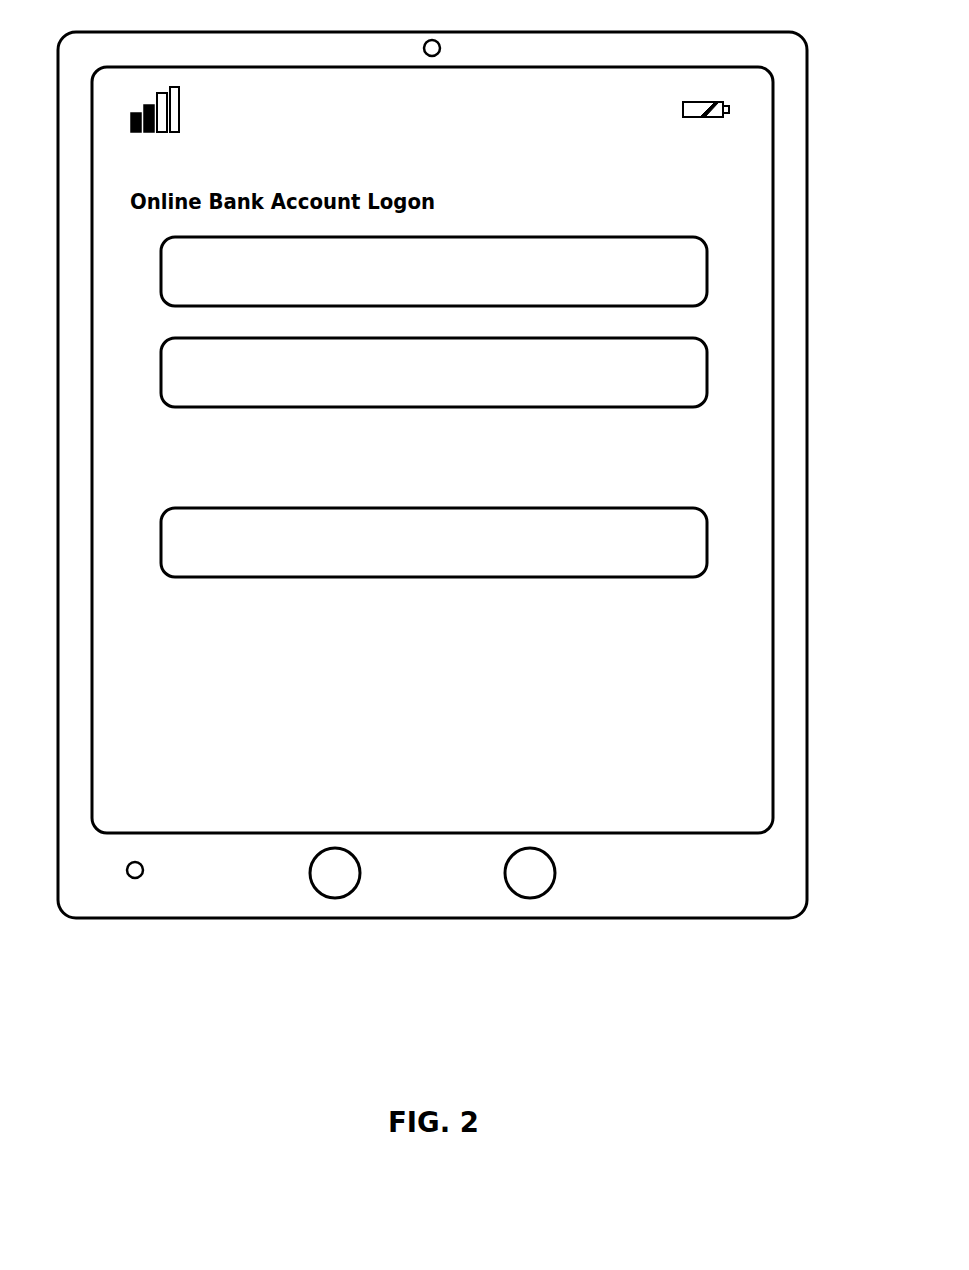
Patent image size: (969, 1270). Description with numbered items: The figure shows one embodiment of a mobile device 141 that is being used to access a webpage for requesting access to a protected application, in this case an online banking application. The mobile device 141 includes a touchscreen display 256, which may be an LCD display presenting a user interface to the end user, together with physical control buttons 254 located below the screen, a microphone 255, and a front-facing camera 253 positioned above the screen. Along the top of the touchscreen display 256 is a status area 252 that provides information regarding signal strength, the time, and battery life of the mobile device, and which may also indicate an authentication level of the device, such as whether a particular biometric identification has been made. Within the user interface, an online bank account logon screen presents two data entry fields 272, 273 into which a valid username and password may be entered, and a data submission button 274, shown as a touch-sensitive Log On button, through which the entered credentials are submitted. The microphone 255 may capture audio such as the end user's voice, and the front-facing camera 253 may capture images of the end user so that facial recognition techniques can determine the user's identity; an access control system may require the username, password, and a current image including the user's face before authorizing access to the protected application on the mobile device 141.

The mobile device 141 is at (525, 997).
The status area 252 is at (817, 87).
The front-facing camera 253 is at (428, 40).
The physical control buttons 254 is at (818, 848).
The microphone 255 is at (144, 866).
The touchscreen display 256 is at (757, 813).
The data entry field 272 is at (697, 281).
The data entry field 273 is at (697, 384).
The data submission button 274 is at (697, 552).